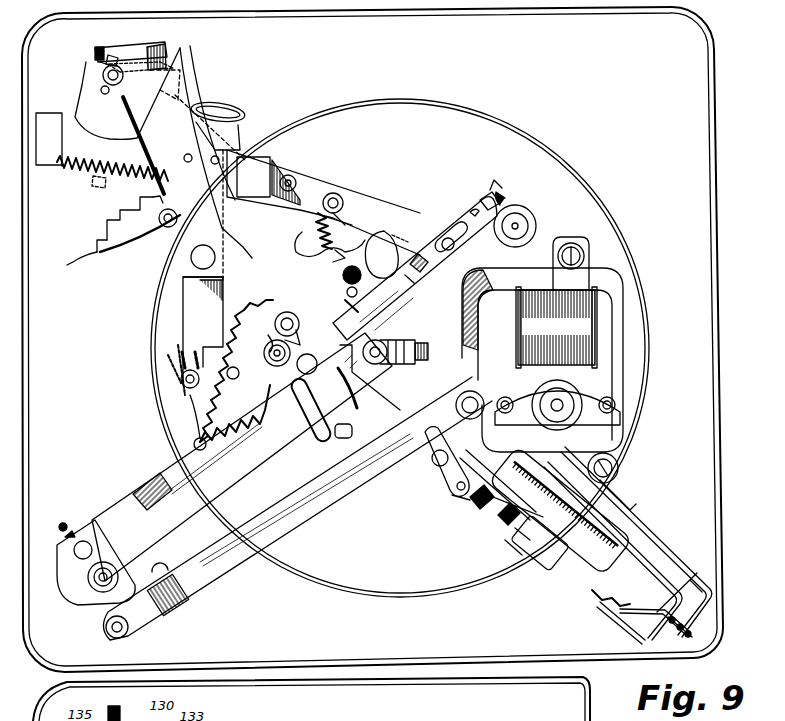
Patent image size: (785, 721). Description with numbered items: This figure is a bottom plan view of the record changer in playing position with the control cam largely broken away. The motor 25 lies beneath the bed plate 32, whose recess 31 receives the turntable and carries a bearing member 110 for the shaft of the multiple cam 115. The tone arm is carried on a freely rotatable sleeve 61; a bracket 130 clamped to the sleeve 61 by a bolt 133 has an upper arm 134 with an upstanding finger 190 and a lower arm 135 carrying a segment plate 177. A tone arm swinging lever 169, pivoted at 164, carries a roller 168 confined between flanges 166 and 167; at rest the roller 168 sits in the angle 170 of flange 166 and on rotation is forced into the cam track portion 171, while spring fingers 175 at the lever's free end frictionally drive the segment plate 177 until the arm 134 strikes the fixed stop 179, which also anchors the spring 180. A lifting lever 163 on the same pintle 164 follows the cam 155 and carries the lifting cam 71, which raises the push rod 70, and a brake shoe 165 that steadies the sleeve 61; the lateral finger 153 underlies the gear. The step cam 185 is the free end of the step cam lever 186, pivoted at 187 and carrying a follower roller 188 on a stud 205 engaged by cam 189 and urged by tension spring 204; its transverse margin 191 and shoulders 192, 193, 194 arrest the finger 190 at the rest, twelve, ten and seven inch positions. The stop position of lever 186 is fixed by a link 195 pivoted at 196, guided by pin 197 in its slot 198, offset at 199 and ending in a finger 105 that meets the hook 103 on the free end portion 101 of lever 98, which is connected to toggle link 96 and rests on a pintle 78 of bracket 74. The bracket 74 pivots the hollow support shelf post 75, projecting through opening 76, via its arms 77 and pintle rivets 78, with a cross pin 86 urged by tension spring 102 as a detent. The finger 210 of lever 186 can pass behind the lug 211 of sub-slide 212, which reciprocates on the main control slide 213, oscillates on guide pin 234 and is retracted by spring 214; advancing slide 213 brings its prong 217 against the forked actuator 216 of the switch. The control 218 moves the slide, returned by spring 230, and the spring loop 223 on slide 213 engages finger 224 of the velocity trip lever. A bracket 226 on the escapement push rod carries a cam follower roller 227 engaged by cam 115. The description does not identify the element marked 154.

The motor 25 is at (625, 383).
The recess 31 is at (603, 228).
The bed plate 32 is at (700, 212).
The sleeve 61 is at (95, 63).
The push rod 70 is at (133, 86).
The lifting cam 71 is at (158, 47).
The bracket 74 is at (632, 525).
The support shelf post 75 is at (680, 550).
The opening 76 is at (690, 572).
The arms 77 is at (562, 575).
The pintle rivets 78 is at (506, 526).
The cross pin 86 is at (592, 592).
The toggle link 96 is at (678, 632).
The lever 98 is at (646, 612).
The free end portion 101 is at (485, 505).
The tension spring 102 is at (576, 483).
The hook 103 is at (518, 540).
The finger 105 is at (542, 563).
The bearing member 110 is at (240, 373).
The multiple cam 115 is at (343, 259).
The bracket 130 is at (128, 46).
The bolt 133 is at (101, 44).
The upper arm 134 is at (96, 160).
The lower arm 135 is at (100, 52).
The lateral finger 153 is at (348, 295).
The link 154 is at (352, 312).
The cam 155 is at (280, 332).
The lifting lever 163 is at (187, 86).
The pintle pin 164 is at (182, 283).
The brake shoe 165 is at (101, 76).
The flange 166 is at (198, 438).
The flange 167 is at (190, 398).
The roller 168 is at (180, 378).
The tone arm swinging lever 169 is at (228, 134).
The angle 170 is at (236, 366).
The cam track portion 171 is at (180, 360).
The spring finger 175 is at (234, 106).
The segment plate 177 is at (88, 118).
The fixed stop 179 is at (46, 166).
The spring 180 is at (62, 175).
The step cam 185 is at (130, 250).
The step cam lever 186 is at (275, 157).
The pivot 187 is at (298, 178).
The cam follower roller 188 is at (345, 205).
The cam 189 is at (355, 223).
The upstanding finger 190 is at (90, 190).
The transverse margin 191 is at (72, 262).
The shoulder 192 is at (96, 243).
The shoulder 193 is at (105, 224).
The shoulder 194 is at (138, 198).
The link 195 is at (358, 403).
The pivot 196 is at (190, 258).
The guide pin 197 is at (434, 465).
The slot 198 is at (457, 494).
The offset 199 is at (476, 514).
The tension spring 204 is at (306, 246).
The stud 205 is at (338, 194).
The finger 210 is at (418, 240).
The lug 211 is at (421, 290).
The sub-slide 212 is at (380, 340).
The main control slide 213 is at (244, 422).
The spring 214 is at (226, 440).
The forked actuator 216 is at (508, 204).
The prong 217 is at (486, 200).
The control 218 is at (80, 582).
The spring loop 223 is at (386, 254).
The finger 224 is at (343, 277).
The bracket 226 is at (390, 364).
The cam follower roller 227 is at (418, 361).
The spring 230 is at (170, 448).
The guide pin 234 is at (306, 383).